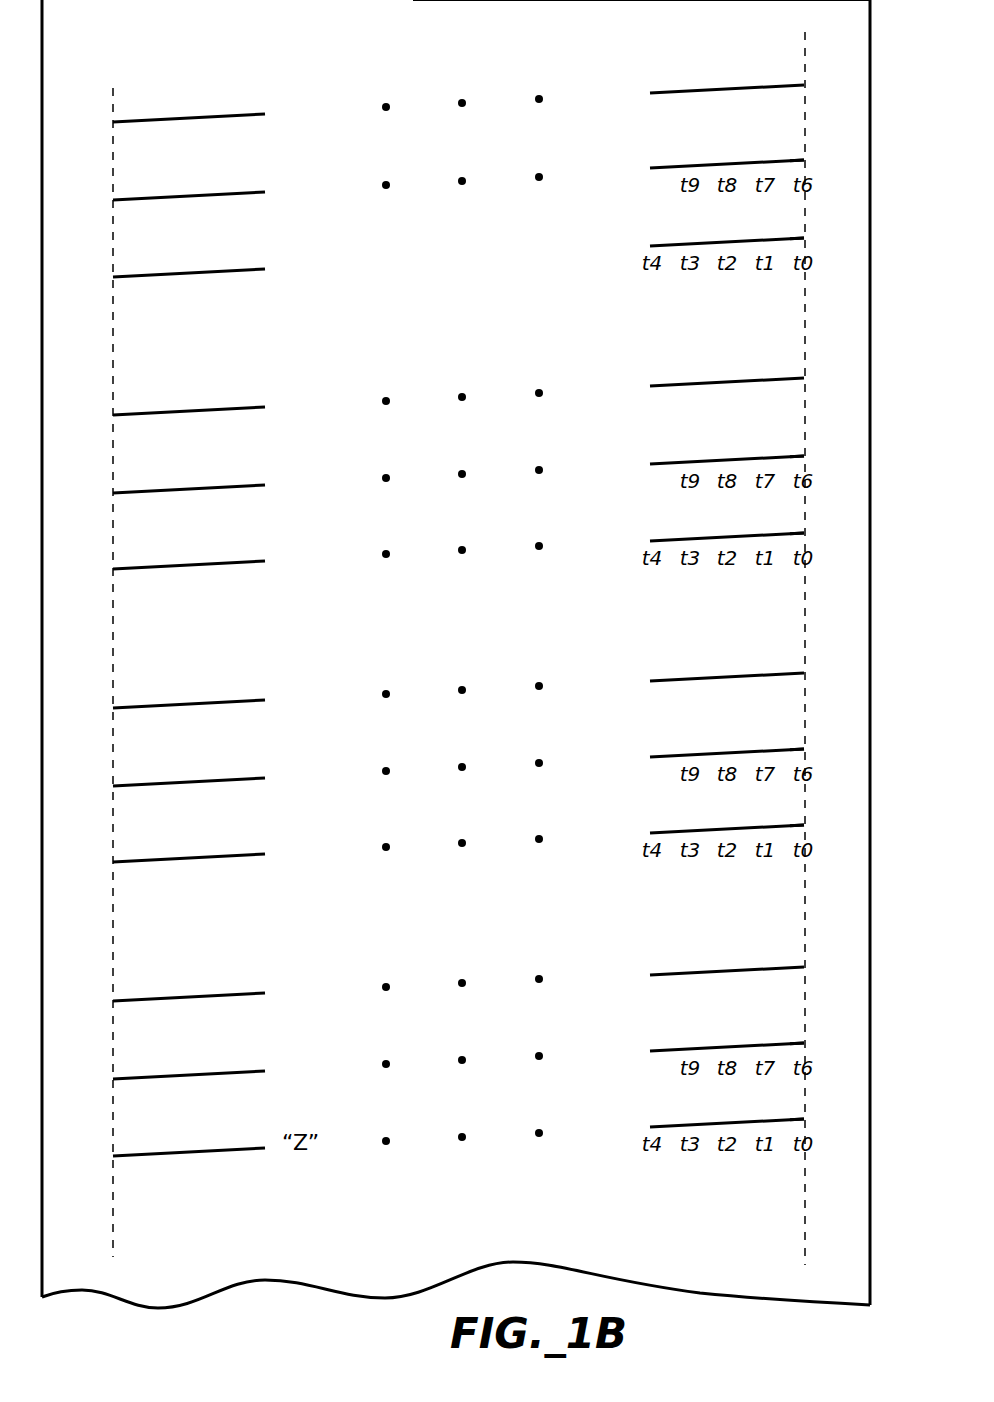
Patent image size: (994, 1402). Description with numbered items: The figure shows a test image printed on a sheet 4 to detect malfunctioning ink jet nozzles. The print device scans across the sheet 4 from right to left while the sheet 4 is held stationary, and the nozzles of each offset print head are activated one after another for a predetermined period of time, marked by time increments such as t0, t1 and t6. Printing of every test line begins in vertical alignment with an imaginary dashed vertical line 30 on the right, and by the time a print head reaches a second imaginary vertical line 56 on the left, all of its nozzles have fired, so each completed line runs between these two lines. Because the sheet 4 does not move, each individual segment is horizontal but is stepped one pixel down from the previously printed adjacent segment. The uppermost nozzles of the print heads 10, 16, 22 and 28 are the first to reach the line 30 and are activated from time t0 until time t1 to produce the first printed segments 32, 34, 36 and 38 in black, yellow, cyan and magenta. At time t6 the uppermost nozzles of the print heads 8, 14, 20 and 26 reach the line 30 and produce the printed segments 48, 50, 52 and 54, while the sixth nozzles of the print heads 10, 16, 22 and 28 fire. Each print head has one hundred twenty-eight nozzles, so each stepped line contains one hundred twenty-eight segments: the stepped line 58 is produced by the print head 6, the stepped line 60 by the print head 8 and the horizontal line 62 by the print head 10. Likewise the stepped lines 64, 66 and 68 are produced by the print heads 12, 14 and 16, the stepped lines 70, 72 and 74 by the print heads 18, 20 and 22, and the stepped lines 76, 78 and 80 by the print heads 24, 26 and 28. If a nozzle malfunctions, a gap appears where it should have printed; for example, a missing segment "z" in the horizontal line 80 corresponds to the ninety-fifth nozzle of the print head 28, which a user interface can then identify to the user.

The sheet 4 is at (870, 116).
The imaginary vertical line 30 is at (804, 636).
The imaginary vertical line 56 is at (112, 653).
The print head 6 is at (741, 85).
The print head 8 is at (741, 160).
The first print head 10 is at (747, 238).
The print head 12 is at (747, 378).
The print head 14 is at (747, 456).
The print head 16 is at (747, 533).
The print head 18 is at (747, 673).
The print head 20 is at (747, 749).
The print head 22 is at (747, 825).
The print head 24 is at (747, 967).
The print head 26 is at (747, 1043).
The print head 28 is at (747, 1119).
The first printed segment 32 is at (804, 236).
The printed segment 34 is at (804, 531).
The printed segment 36 is at (804, 823).
The printed segment 38 is at (804, 1117).
The printed segment 48 is at (804, 158).
The printed segment 50 is at (804, 454).
The printed segment 52 is at (804, 747).
The printed segment 54 is at (804, 1041).
The stepped line 58 is at (170, 121).
The stepped line 60 is at (170, 199).
The horizontal line 62 is at (170, 276).
The stepped line 64 is at (170, 414).
The stepped line 66 is at (170, 492).
The stepped line 68 is at (170, 568).
The stepped line 70 is at (170, 707).
The stepped line 72 is at (170, 785).
The stepped line 74 is at (170, 861).
The stepped line 76 is at (170, 1000).
The stepped line 78 is at (170, 1078).
The horizontal line 80 is at (170, 1155).